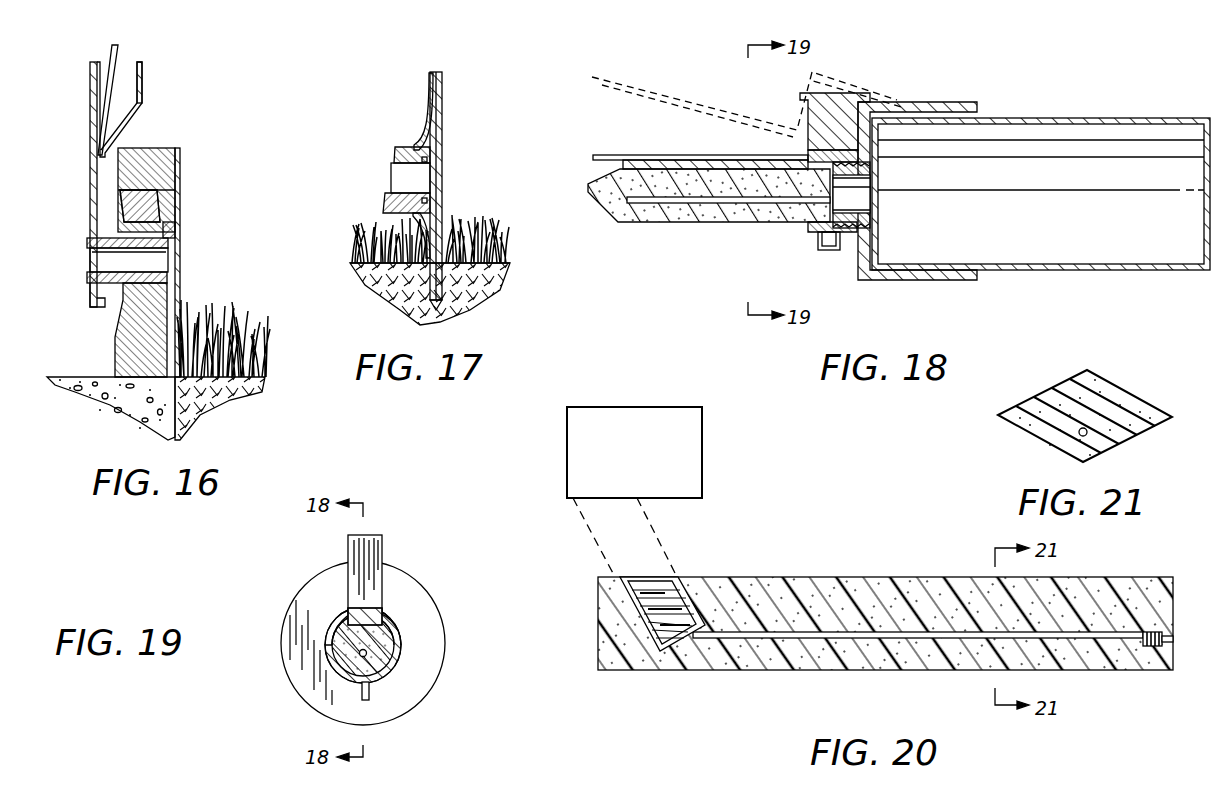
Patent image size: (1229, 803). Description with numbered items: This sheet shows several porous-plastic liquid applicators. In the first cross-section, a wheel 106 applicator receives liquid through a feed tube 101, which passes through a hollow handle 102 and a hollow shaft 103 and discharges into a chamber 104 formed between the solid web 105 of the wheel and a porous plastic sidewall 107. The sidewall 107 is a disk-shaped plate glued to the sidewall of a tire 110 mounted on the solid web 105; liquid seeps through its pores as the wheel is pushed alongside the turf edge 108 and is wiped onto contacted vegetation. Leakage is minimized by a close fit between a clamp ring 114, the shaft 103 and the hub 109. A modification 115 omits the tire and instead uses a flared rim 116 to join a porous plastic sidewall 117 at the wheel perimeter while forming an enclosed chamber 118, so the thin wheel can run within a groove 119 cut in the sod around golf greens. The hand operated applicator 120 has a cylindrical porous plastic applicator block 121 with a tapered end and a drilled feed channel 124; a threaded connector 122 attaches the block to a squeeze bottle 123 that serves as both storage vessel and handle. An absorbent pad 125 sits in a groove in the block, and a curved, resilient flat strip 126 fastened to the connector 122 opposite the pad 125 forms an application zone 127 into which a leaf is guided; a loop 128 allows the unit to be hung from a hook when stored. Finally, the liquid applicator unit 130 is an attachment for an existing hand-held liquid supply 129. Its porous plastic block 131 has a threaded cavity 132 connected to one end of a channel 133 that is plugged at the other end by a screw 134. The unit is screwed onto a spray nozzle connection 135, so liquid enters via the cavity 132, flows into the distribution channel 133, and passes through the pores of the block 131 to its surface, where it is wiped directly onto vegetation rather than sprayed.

In FIG. 16, the feed tube 101 is at (122, 52).
In FIG. 16, the hollow handle 102 is at (142, 76).
In FIG. 16, the hollow shaft 103 is at (170, 240).
In FIG. 16, the chamber 104 is at (165, 303).
In FIG. 16, the solid web 105 is at (116, 322).
In FIG. 16, the wheel 106 is at (147, 140).
In FIG. 16, the porous plastic sidewall 107 is at (176, 256).
In FIG. 16, the turf edge 108 is at (197, 380).
In FIG. 16, the hub 109 is at (167, 200).
In FIG. 16, the tire 110 is at (160, 148).
In FIG. 16, the clamp ring 114 is at (173, 225).
In FIG. 17, the modification 115 is at (462, 104).
In FIG. 17, the flared rim 116 is at (430, 223).
In FIG. 17, the porous plastic sidewall 117 is at (443, 180).
In FIG. 17, the enclosed chamber 118 is at (433, 146).
In FIG. 17, the groove 119 is at (445, 287).
In FIG. 18, the applicator 120 is at (1097, 88).
In FIG. 19, the applicator 120 is at (278, 577).
In FIG. 18, the porous plastic applicator block 121 is at (594, 197).
In FIG. 19, the porous plastic applicator block 121 is at (398, 650).
In FIG. 18, the threaded connector 122 is at (807, 228).
In FIG. 18, the squeeze bottle 123 is at (1078, 268).
In FIG. 19, the squeeze bottle 123 is at (421, 707).
In FIG. 18, the feed channel 124 is at (662, 204).
In FIG. 19, the feed channel 124 is at (357, 656).
In FIG. 18, the absorbent pad 125 is at (762, 162).
In FIG. 19, the absorbent pad 125 is at (380, 617).
In FIG. 18, the curved resilient flat strip 126 is at (668, 156).
In FIG. 19, the curved resilient flat strip 126 is at (383, 548).
In FIG. 18, the application zone 127 is at (600, 167).
In FIG. 18, the loop 128 is at (827, 251).
In FIG. 19, the loop 128 is at (370, 697).
In FIG. 20, the hand-held liquid supply 129 is at (703, 447).
In FIG. 20, the liquid applicator unit 130 is at (899, 530).
In FIG. 21, the liquid applicator unit 130 is at (1130, 363).
In FIG. 20, the porous plastic block 131 is at (769, 577).
In FIG. 21, the porous plastic block 131 is at (1133, 393).
In FIG. 20, the threaded cavity 132 is at (690, 588).
In FIG. 20, the channel 133 is at (818, 631).
In FIG. 21, the channel 133 is at (1090, 434).
In FIG. 20, the screw 134 is at (1173, 632).
In FIG. 20, the spray nozzle connection 135 is at (662, 537).